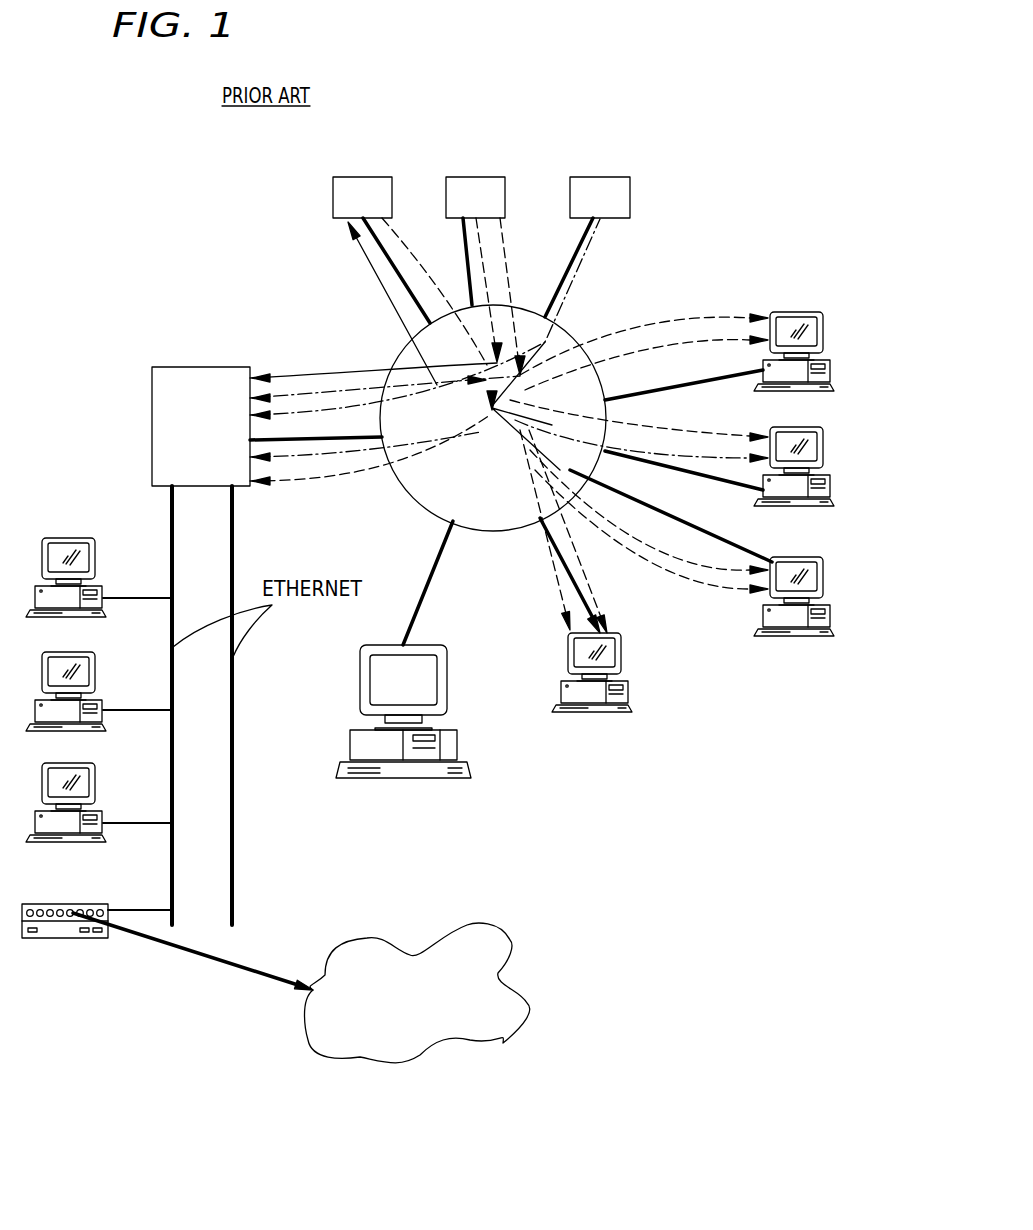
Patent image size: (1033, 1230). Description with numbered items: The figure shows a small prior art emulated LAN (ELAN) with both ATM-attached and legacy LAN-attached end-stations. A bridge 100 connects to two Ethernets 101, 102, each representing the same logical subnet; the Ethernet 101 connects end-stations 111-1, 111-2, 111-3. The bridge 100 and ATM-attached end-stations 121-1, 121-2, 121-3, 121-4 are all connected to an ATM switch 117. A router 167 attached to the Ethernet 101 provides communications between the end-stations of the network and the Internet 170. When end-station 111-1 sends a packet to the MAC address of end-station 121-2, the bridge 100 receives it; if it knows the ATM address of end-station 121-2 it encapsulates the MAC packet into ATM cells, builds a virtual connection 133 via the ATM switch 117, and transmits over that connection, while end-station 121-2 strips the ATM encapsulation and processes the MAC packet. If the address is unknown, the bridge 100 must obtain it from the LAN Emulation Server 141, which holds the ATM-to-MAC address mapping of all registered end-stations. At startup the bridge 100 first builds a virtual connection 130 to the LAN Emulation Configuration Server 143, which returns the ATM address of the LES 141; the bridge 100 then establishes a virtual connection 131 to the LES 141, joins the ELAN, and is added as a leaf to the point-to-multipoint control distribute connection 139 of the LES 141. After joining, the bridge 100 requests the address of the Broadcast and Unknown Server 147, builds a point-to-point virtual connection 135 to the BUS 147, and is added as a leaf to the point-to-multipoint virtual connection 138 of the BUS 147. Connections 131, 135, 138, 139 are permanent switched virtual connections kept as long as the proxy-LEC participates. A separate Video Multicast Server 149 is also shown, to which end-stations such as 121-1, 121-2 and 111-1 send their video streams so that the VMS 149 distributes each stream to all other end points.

The bridge 100 is at (165, 364).
The Ethernet 101 is at (174, 793).
The Ethernet 102 is at (234, 745).
The end-station 111-1 is at (63, 538).
The end-station 111-2 is at (115, 662).
The end-station 111-3 is at (115, 772).
The ATM switch 117 is at (478, 531).
The end-station 121-1 is at (792, 312).
The end-station 121-2 is at (800, 427).
The end-station 121-3 is at (803, 553).
The end-station 121-4 is at (620, 667).
The virtual connection 130 is at (350, 407).
The virtual connection 131 is at (397, 337).
The virtual connection 133 is at (322, 452).
The point-to-point virtual connection 135 is at (297, 395).
The point-to-multipoint virtual connection 138 is at (373, 445).
The point-to-multipoint control distribute connection 139 is at (282, 483).
The LAN Emulation Server 141 is at (360, 176).
The LAN Emulation Configuration Server 143 is at (600, 176).
The Broadcast and Unknown Server 147 is at (476, 176).
The Video Multicast Server 149 is at (420, 782).
The router 167 is at (72, 903).
The Internet 170 is at (510, 942).